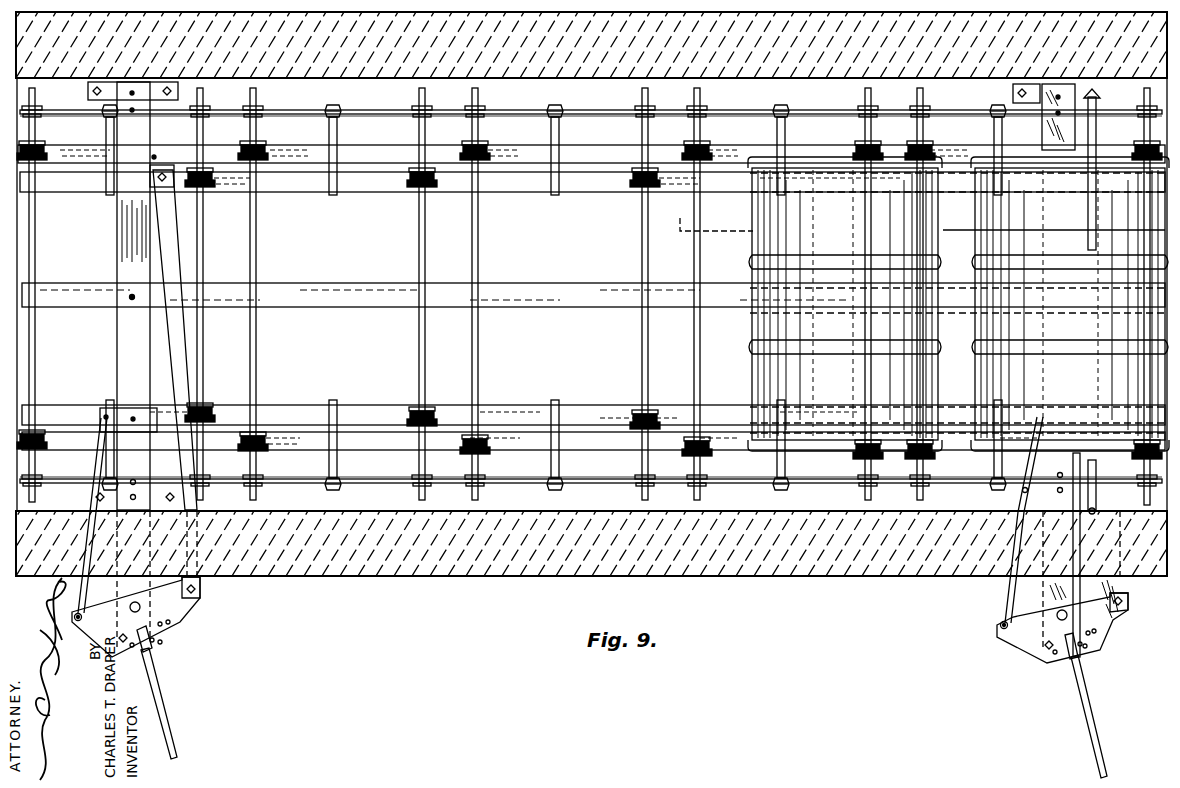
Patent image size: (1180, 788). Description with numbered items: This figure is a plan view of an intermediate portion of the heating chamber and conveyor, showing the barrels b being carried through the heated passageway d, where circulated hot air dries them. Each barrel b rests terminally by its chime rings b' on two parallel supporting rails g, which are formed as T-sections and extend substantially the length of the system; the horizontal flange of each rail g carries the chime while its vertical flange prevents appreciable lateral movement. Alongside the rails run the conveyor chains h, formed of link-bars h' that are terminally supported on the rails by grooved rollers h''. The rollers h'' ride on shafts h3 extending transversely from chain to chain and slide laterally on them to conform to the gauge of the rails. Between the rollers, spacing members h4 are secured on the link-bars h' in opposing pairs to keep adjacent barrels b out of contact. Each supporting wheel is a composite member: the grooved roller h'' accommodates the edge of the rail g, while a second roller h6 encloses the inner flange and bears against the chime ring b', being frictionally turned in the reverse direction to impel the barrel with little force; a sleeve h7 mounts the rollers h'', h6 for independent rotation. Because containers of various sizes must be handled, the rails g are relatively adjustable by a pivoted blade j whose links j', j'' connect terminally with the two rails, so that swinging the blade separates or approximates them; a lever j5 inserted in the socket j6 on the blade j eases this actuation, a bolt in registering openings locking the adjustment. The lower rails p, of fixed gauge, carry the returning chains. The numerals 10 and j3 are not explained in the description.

The heated passageway d is at (510, 512).
The conveyor chain h is at (591, 300).
The link-bar h' is at (591, 298).
The grooved roller h'' is at (589, 296).
The roller shaft h3 is at (204, 252).
The spacing member h4 is at (333, 197).
The chime-engaging roller h6 is at (268, 161).
The sleeve h7 is at (634, 190).
The supporting rail g is at (388, 160).
The lower rail p is at (398, 186).
The barrel b is at (944, 304).
The chime ring b' is at (951, 302).
The thread 10 is at (1120, 228).
The pivoted blade j is at (600, 620).
The link j' is at (548, 520).
The link j'' is at (639, 383).
The pivot j3 is at (133, 652).
The lever j5 is at (168, 707).
The socket j6 is at (160, 643).